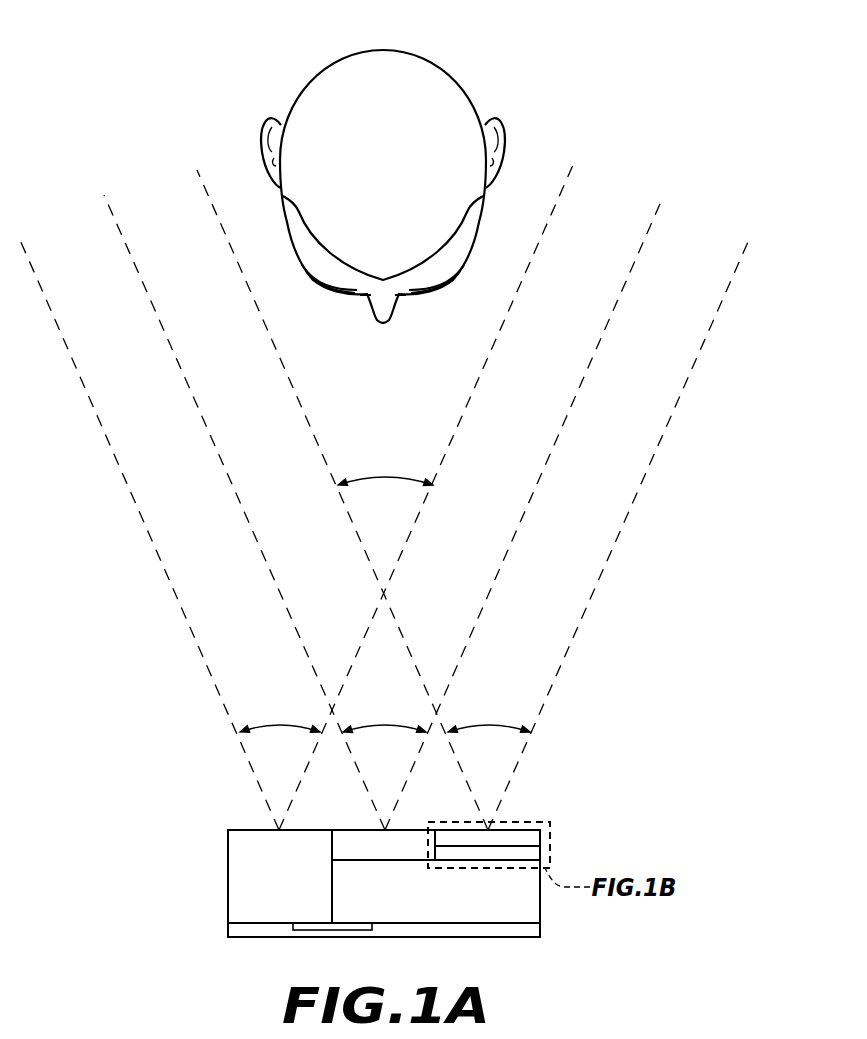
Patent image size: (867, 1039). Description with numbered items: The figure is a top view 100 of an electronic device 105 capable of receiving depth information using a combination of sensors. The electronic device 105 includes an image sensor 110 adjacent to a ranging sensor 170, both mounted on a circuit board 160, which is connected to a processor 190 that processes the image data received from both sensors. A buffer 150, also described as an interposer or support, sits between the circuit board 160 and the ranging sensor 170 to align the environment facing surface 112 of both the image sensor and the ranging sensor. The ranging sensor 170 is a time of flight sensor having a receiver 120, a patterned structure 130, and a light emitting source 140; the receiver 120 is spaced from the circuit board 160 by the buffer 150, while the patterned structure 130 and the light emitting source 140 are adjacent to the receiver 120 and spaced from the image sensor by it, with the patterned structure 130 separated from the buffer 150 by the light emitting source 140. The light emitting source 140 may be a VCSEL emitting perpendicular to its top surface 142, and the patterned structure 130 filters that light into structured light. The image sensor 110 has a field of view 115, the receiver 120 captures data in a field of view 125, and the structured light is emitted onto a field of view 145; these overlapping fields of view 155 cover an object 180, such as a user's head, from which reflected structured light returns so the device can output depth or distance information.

The top view 100 is at (670, 130).
The electronic device 105 is at (237, 948).
The image sensor 110 is at (228, 868).
The environment facing surface 112 is at (343, 830).
The field of view 115 is at (277, 725).
The receiver 120 is at (362, 838).
The field of view 125 is at (383, 725).
The patterned structure 130 is at (541, 838).
The light emitting source 140 is at (541, 851).
The top surface 142 is at (508, 843).
The field of view 145 is at (493, 725).
The buffer 150 is at (541, 900).
The overlapping fields of view 155 is at (383, 477).
The circuit board 160 is at (541, 932).
The ranging sensor 170 is at (432, 811).
The object 180 is at (420, 72).
The processor 190 is at (330, 931).